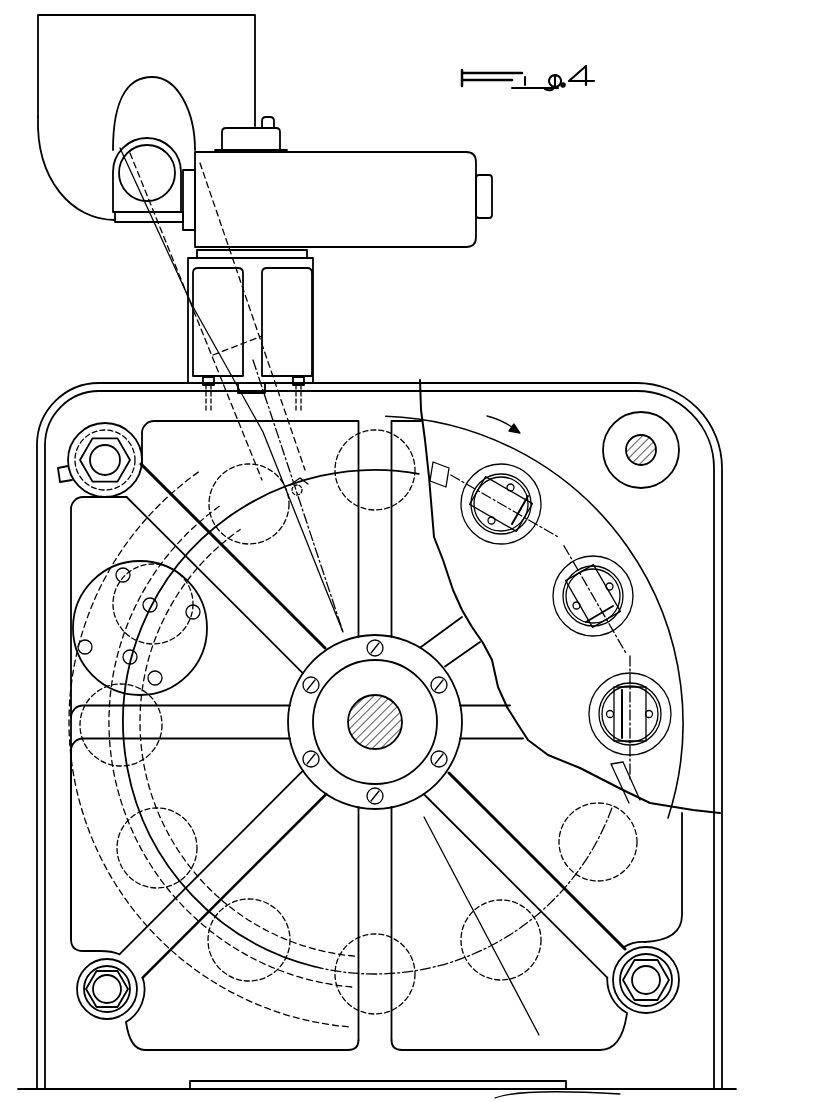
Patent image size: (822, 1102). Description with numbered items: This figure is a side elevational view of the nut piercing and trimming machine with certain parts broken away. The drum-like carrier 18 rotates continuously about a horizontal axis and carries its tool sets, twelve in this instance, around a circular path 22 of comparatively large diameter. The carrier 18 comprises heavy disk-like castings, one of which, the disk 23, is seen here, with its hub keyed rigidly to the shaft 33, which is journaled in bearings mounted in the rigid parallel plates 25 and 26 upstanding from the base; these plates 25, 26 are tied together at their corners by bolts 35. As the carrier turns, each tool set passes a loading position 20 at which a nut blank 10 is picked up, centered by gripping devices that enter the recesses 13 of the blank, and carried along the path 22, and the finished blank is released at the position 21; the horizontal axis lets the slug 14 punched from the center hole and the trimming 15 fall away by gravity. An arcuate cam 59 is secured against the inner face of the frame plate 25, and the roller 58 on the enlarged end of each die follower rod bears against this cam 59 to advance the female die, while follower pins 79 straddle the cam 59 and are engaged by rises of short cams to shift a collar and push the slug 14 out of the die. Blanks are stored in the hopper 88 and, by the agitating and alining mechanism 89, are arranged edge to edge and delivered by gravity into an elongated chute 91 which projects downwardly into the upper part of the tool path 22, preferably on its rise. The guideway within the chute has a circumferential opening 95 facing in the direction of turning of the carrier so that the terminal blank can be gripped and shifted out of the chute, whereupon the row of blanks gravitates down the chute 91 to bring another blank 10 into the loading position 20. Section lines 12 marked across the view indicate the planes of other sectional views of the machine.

The nut blank 10 is at (300, 492).
The section line 12- 12 is at (234, 447).
The recesses 13 is at (398, 400).
The slug 14 is at (528, 828).
The trimming 15 is at (462, 867).
The drum-like carrier 18 is at (552, 454).
The loading position 20 is at (302, 496).
The release position 21 is at (440, 866).
The circular path 22 is at (560, 538).
The disk-like casting 23 is at (612, 537).
The frame plate 25 is at (411, 380).
The frame plate 26 is at (626, 390).
The shaft 33 is at (375, 702).
The bolts 35 is at (106, 455).
The roller 58 is at (538, 506).
The arcuate cam 59 is at (445, 468).
The follower pins 79 is at (514, 487).
The hopper 88 is at (246, 76).
The agitating and alining mechanism 89 is at (130, 213).
The chute 91 is at (180, 258).
The circumferential opening 95 is at (302, 476).